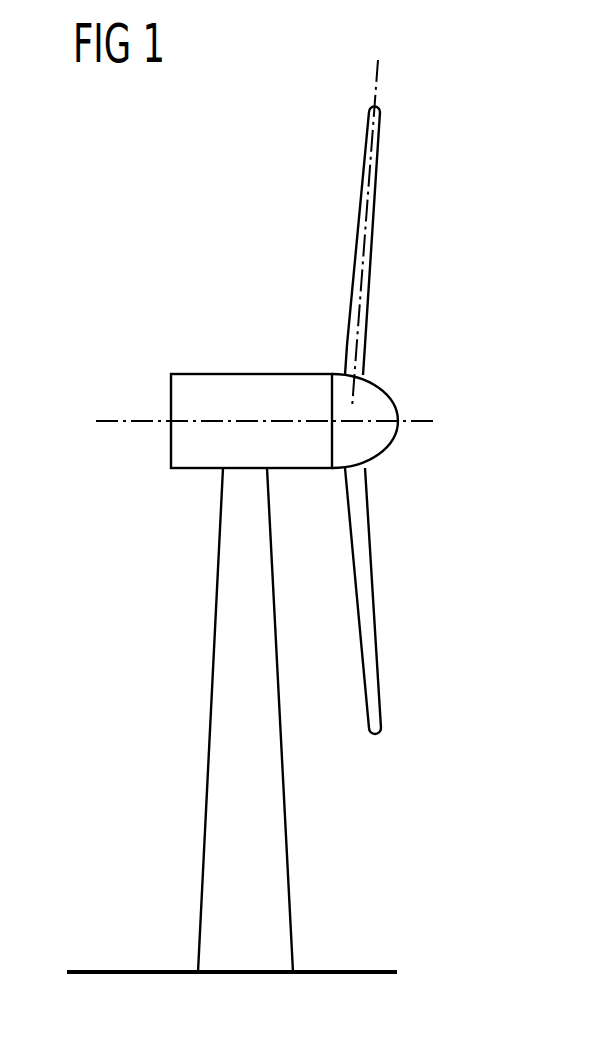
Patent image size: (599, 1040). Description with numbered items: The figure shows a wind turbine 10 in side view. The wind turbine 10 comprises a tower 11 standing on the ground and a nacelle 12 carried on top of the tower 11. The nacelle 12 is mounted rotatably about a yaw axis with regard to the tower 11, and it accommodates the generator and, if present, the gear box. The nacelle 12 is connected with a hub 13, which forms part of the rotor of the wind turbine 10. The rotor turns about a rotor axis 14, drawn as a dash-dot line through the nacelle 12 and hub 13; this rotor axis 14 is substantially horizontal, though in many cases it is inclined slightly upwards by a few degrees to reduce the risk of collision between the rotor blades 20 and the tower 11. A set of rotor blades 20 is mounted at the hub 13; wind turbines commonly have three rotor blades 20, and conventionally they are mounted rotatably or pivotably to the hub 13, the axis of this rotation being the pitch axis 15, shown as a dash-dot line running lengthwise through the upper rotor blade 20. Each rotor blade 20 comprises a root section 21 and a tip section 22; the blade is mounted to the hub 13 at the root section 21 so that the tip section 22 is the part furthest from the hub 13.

The wind turbine 10 is at (160, 615).
The tower 11 is at (267, 803).
The nacelle 12 is at (222, 374).
The hub 13 is at (393, 397).
The rotor axis 14 is at (113, 419).
The pitch axis 15 is at (378, 74).
The rotor blade 20 is at (387, 247).
The root section 21 is at (370, 343).
The tip section 22 is at (382, 122).